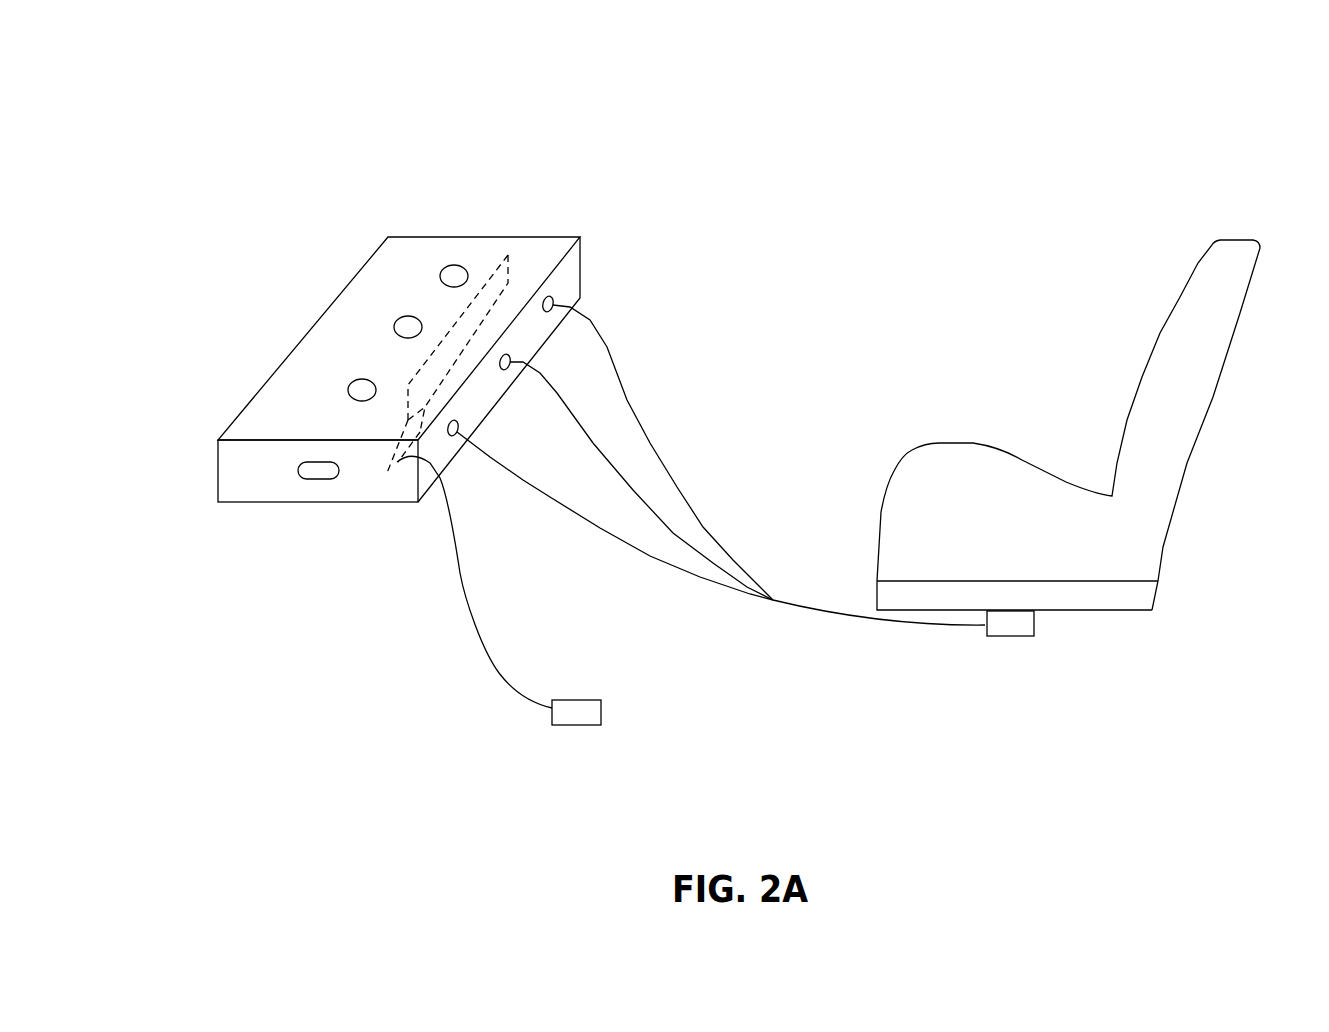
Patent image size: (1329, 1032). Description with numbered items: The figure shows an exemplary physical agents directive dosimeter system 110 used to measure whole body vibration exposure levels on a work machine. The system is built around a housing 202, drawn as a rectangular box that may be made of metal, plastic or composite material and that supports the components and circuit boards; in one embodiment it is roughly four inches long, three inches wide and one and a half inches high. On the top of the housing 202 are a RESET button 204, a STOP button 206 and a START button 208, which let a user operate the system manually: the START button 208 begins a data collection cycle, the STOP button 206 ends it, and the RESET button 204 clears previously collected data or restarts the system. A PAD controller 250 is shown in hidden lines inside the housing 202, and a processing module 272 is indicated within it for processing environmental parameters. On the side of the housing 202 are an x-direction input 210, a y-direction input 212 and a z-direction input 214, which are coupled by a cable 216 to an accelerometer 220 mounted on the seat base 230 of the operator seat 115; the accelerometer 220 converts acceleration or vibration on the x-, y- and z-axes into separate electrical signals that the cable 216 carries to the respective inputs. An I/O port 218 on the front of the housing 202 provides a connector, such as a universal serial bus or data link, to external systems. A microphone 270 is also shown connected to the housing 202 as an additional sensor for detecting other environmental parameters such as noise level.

The PAD dosimeter system 110 is at (427, 394).
The housing 202 is at (494, 234).
The RESET button 204 is at (448, 273).
The STOP button 206 is at (402, 324).
The START button 208 is at (356, 387).
The PAD controller 250 is at (403, 438).
The processing module 272 is at (388, 472).
The x-direction input 210 is at (553, 302).
The y-direction input 212 is at (512, 359).
The z-direction input 214 is at (452, 440).
The cable 216 is at (773, 600).
The I/O port 218 is at (317, 472).
The microphone 270 is at (567, 725).
The operator seat 115 is at (1102, 427).
The seat base 230 is at (1142, 595).
The accelerometer 220 is at (1012, 622).